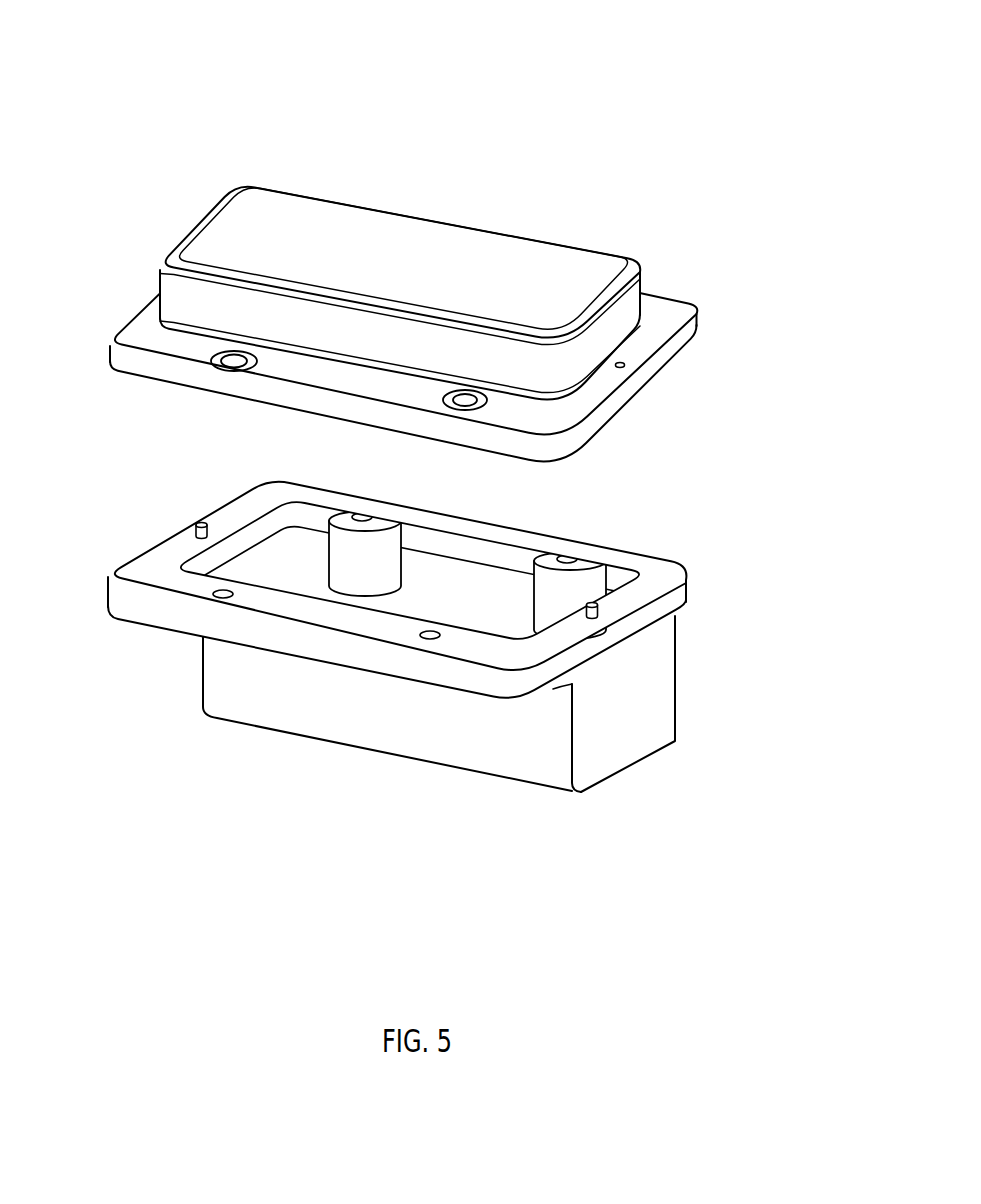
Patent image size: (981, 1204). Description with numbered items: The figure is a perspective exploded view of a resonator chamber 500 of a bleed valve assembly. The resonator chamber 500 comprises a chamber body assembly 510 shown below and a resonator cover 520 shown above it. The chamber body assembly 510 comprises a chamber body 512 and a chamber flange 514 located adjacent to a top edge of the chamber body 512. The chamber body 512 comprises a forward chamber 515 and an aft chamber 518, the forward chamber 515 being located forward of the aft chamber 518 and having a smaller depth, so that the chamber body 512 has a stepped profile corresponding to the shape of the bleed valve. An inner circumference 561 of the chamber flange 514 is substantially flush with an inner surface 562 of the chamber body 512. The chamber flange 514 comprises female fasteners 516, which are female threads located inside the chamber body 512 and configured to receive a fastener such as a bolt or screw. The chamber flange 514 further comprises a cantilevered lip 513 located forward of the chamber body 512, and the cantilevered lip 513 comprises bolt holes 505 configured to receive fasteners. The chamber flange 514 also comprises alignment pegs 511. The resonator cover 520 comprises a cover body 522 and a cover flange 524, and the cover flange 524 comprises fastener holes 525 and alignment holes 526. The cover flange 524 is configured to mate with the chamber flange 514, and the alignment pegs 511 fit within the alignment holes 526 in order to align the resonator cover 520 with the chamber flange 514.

The resonator chamber 500 is at (420, 448).
The resonator cover 520 is at (422, 306).
The cover body 522 is at (608, 245).
The cover flange 524 is at (693, 340).
The fastener holes 525 is at (216, 370).
The alignment holes 526 is at (625, 372).
The chamber body assembly 510 is at (411, 669).
The chamber body 512 is at (473, 733).
The cantilevered lip 513 is at (203, 622).
The chamber flange 514 is at (153, 563).
The bolt holes 505 is at (424, 639).
The alignment pegs 511 is at (598, 616).
The forward chamber 515 is at (553, 690).
The female fasteners 516 is at (591, 578).
The aft chamber 518 is at (623, 713).
The inner circumference 561 is at (497, 555).
The inner surface 562 is at (480, 578).